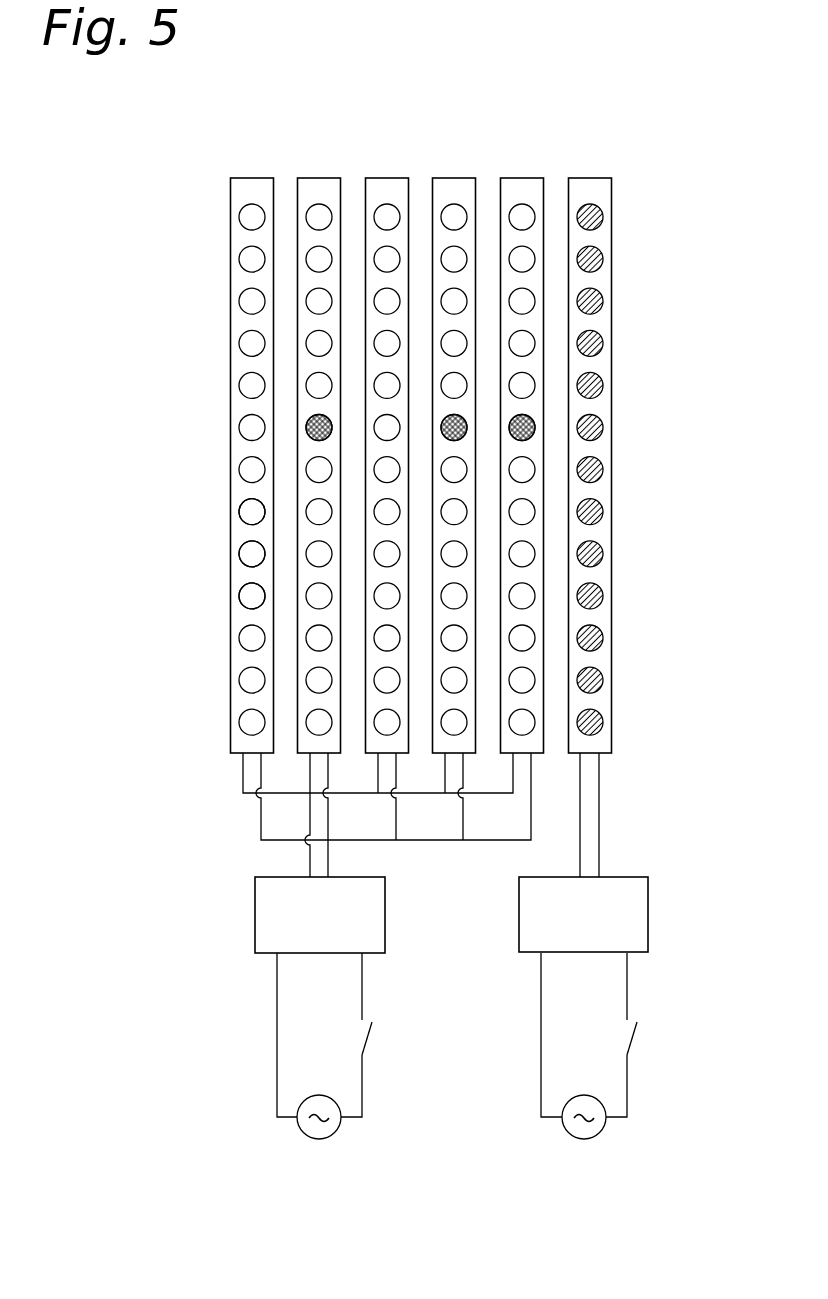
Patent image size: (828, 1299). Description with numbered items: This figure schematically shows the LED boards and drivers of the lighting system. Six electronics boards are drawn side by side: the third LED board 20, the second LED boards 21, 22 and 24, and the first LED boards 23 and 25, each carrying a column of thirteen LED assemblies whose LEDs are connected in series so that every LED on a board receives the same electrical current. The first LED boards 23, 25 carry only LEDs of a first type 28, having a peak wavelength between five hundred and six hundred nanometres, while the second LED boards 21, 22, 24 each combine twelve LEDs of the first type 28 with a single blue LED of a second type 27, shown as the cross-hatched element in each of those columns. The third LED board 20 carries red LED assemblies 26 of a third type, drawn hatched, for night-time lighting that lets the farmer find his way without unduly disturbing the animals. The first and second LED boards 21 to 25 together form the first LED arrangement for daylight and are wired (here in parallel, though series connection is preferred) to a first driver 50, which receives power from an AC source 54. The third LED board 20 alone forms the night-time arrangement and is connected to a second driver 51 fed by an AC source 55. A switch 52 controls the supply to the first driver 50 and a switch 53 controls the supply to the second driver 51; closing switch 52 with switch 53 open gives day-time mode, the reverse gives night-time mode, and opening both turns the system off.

The third LED board 20 is at (584, 196).
The second LED board 21 is at (524, 196).
The second LED board 22 is at (455, 196).
The first LED board 23 is at (388, 196).
The second LED board 24 is at (318, 196).
The first LED board 25 is at (246, 190).
The LED assembly 26 is at (598, 385).
The LED of a second type 27 is at (314, 427).
The LED of a first type 28 is at (253, 515).
The first driver 50 is at (265, 915).
The second driver 51 is at (535, 915).
The switch 52 is at (371, 1040).
The switch 53 is at (636, 1040).
The AC source 54 is at (323, 1128).
The AC source 55 is at (588, 1128).